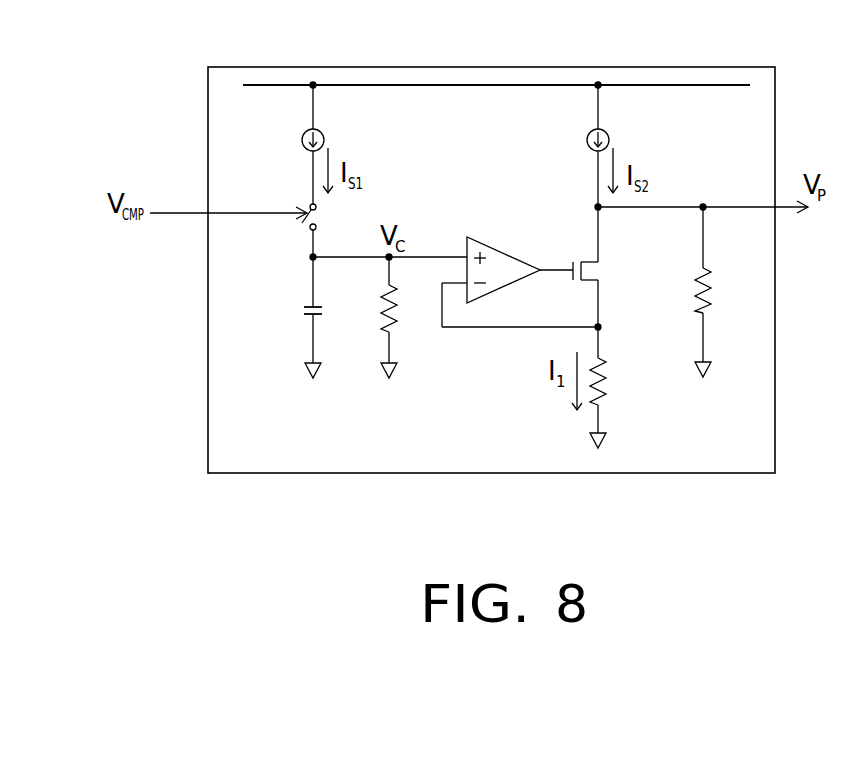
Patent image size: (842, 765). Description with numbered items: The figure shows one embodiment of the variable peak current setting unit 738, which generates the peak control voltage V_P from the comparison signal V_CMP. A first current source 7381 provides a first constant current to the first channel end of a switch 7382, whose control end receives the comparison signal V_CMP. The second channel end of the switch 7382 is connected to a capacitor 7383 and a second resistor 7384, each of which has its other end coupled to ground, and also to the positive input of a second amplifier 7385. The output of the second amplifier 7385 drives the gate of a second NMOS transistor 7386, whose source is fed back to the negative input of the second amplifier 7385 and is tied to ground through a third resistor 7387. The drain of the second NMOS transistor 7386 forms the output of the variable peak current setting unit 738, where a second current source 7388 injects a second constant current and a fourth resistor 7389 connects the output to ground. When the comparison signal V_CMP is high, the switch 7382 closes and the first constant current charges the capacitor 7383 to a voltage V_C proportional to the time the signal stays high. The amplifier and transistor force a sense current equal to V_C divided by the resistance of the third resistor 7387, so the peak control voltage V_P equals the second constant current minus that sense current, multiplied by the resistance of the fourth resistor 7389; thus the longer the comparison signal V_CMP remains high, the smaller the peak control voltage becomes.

The variable peak current setting unit 738 is at (647, 67).
The first current source 7381 is at (324, 137).
The switch 7382 is at (315, 218).
The capacitor 7383 is at (300, 311).
The second resistor 7384 is at (400, 317).
The second amplifier 7385 is at (505, 252).
The second NMOS transistor 7386 is at (600, 269).
The third resistor 7387 is at (568, 390).
The second current source 7388 is at (609, 137).
The fourth resistor 7389 is at (712, 318).